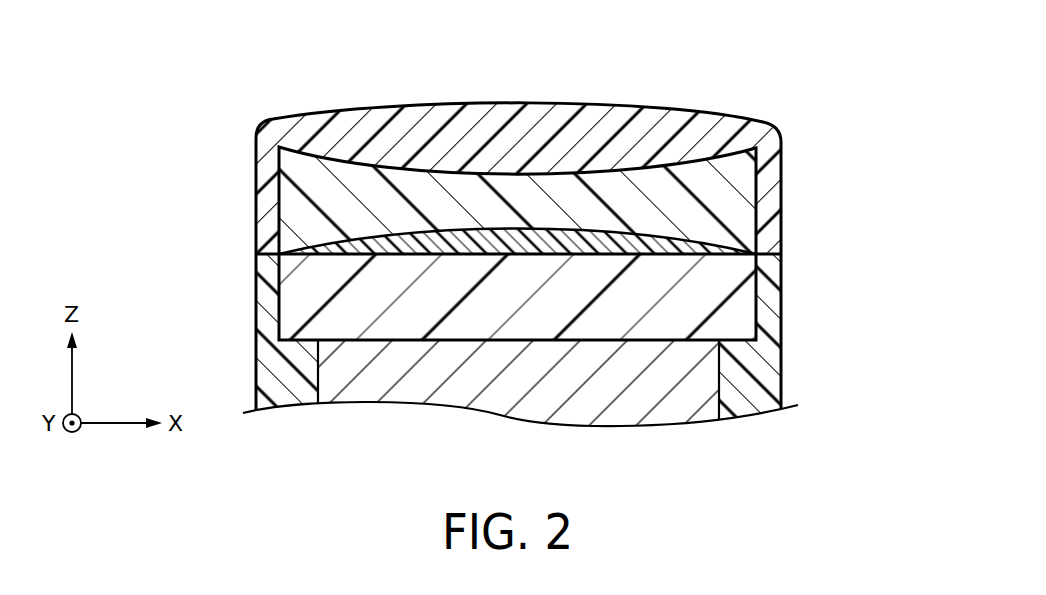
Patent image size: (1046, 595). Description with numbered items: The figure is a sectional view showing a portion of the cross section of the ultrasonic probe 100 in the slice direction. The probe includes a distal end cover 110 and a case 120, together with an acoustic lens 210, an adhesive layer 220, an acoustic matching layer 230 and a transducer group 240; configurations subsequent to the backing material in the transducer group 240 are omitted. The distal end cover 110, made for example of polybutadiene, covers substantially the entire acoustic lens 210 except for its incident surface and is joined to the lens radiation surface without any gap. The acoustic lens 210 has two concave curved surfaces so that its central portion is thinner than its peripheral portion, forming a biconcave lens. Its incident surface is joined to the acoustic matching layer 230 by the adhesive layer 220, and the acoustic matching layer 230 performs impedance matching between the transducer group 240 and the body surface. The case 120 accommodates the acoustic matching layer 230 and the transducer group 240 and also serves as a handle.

The ultrasonic probe 100 is at (751, 79).
The distal end cover 110 is at (773, 150).
The case 120 is at (262, 277).
The acoustic lens 210 is at (737, 197).
The adhesive layer 220 is at (690, 247).
The acoustic matching layer 230 is at (737, 313).
The transducer group 240 is at (705, 382).